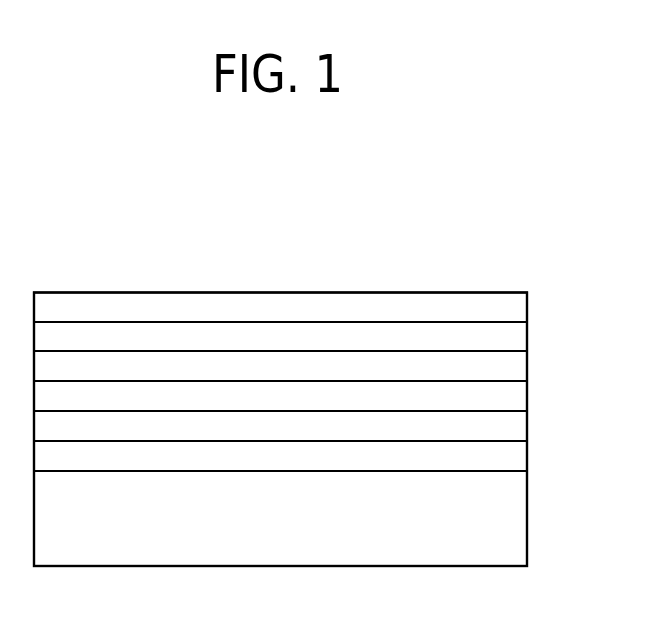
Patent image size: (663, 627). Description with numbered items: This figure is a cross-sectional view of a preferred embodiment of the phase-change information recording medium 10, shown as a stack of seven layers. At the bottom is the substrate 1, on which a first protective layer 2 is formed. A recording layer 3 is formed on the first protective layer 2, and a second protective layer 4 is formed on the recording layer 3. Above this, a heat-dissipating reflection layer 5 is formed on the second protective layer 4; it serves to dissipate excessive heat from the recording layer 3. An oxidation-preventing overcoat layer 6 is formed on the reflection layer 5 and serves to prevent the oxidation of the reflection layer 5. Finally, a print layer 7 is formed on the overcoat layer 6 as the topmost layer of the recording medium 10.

The phase-change information recording medium 10 is at (362, 263).
The substrate 1 is at (507, 534).
The first protective layer 2 is at (508, 461).
The recording layer 3 is at (508, 429).
The second protective layer 4 is at (508, 401).
The heat-dissipating reflection layer 5 is at (508, 371).
The oxidation-preventing overcoat layer 6 is at (508, 343).
The print layer 7 is at (508, 310).